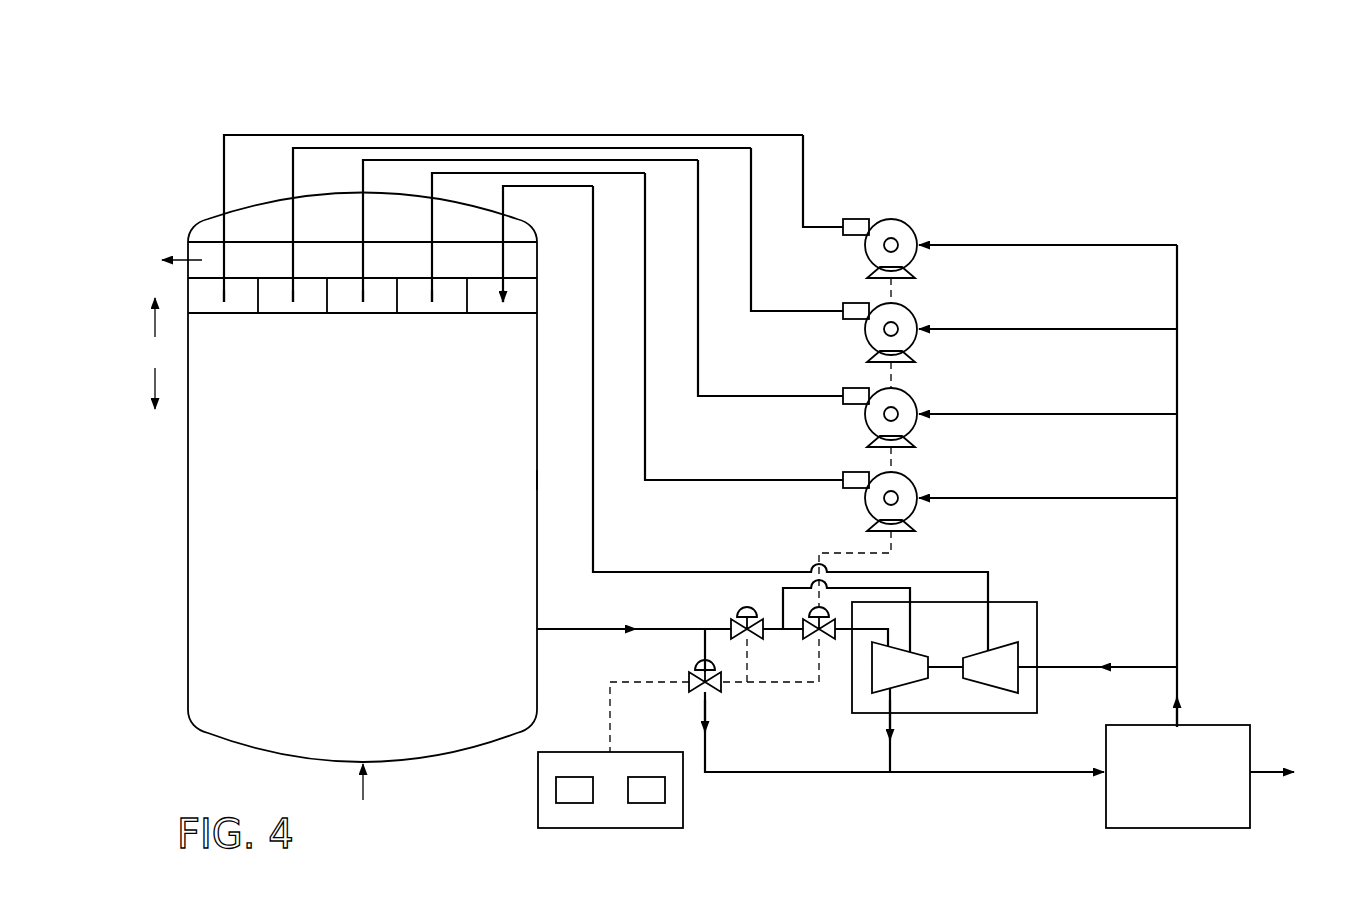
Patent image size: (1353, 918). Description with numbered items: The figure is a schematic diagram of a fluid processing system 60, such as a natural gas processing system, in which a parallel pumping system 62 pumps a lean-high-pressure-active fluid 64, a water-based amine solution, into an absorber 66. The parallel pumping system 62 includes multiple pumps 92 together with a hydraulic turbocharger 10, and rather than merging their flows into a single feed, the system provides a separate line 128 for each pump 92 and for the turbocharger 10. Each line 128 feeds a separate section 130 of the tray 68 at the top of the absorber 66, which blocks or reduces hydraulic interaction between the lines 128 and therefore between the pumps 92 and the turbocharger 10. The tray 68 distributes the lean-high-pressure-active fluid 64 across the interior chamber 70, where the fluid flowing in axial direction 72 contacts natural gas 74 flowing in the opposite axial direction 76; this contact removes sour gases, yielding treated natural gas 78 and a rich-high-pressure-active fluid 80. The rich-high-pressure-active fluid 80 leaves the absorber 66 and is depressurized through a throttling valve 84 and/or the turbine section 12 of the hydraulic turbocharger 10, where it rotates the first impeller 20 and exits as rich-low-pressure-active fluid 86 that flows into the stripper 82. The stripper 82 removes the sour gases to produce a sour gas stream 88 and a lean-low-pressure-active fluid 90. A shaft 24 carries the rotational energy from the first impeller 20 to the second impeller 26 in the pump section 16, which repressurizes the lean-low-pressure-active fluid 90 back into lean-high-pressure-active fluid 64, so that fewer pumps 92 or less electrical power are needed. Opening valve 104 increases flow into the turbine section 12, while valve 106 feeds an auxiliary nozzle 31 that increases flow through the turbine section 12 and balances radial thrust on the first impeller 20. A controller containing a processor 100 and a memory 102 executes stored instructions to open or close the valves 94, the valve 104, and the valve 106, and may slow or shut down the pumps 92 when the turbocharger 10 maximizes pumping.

The hydraulic turbocharger 10 is at (947, 663).
The turbine section 12 is at (868, 672).
The pump section 16 is at (990, 691).
The first impeller 20 is at (917, 653).
The shaft 24 is at (945, 669).
The second impeller 26 is at (1005, 645).
The auxiliary nozzle 31 is at (900, 637).
The fluid processing system 60 is at (892, 805).
The parallel pumping system 62 is at (1043, 186).
The lean-high-pressure-active fluid 64 is at (535, 173).
The absorber 66 is at (539, 478).
The tray 68 is at (412, 344).
The interior chamber 70 is at (357, 512).
The axial direction 72 is at (155, 387).
The natural gas 74 is at (361, 790).
The opposite axial direction 76 is at (155, 322).
The treated natural gas 78 is at (182, 258).
The rich-high-pressure-active fluid 80 is at (587, 630).
The stripper 82 is at (1106, 805).
The valve 84 is at (694, 689).
The rich-low-pressure-active fluid 86 is at (790, 775).
The sour gas stream 88 is at (1263, 770).
The lean-low-pressure-active fluid 90 is at (1178, 622).
The pumps 92 is at (906, 225).
The valves 94 is at (607, 804).
The processor 100 is at (556, 790).
The memory 102 is at (666, 790).
The valve 104 is at (738, 611).
The valve 106 is at (814, 640).
The line 128 is at (593, 325).
The section 130 is at (242, 313).